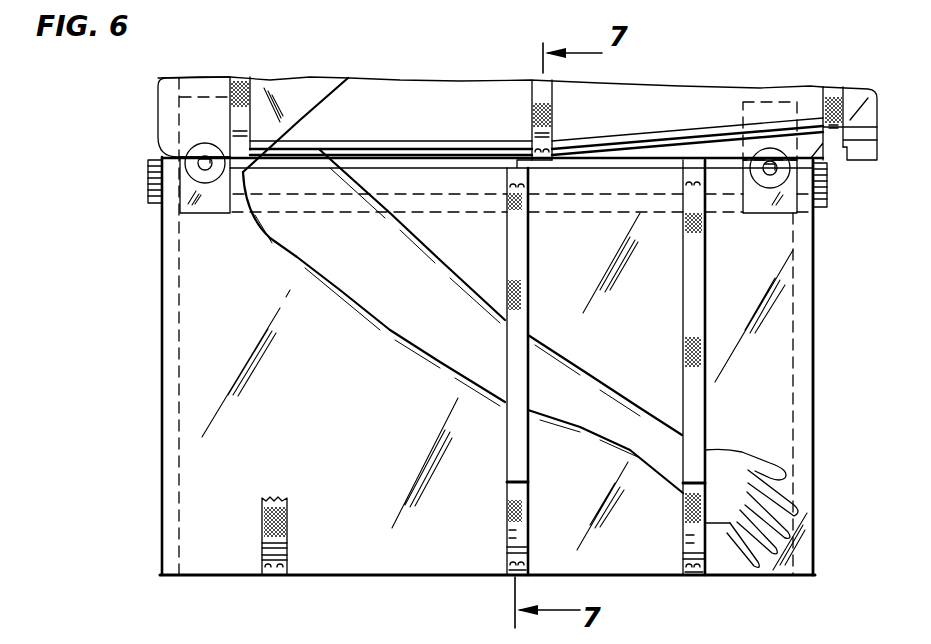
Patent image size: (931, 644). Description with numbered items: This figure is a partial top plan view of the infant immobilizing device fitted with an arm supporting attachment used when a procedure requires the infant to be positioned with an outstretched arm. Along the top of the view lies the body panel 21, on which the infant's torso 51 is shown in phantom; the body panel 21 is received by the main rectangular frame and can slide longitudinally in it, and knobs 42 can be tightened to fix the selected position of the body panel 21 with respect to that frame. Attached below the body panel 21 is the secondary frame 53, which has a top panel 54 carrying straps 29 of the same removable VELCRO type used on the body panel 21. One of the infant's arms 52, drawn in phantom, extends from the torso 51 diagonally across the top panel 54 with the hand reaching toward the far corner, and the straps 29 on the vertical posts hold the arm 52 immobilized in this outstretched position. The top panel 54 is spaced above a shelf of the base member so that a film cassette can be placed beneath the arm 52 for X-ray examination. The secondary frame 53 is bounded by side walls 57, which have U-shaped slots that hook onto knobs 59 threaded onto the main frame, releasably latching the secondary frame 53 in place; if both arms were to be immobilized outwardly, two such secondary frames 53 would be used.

The body panel 21 is at (165, 112).
The straps 29 is at (527, 526).
The knobs 42 is at (207, 182).
The infant's torso 51 is at (596, 136).
The arms 52 is at (384, 326).
The secondary frame 53 is at (156, 455).
The top panel 54 is at (392, 560).
The side walls 57 is at (803, 590).
The knobs 59 is at (148, 192).